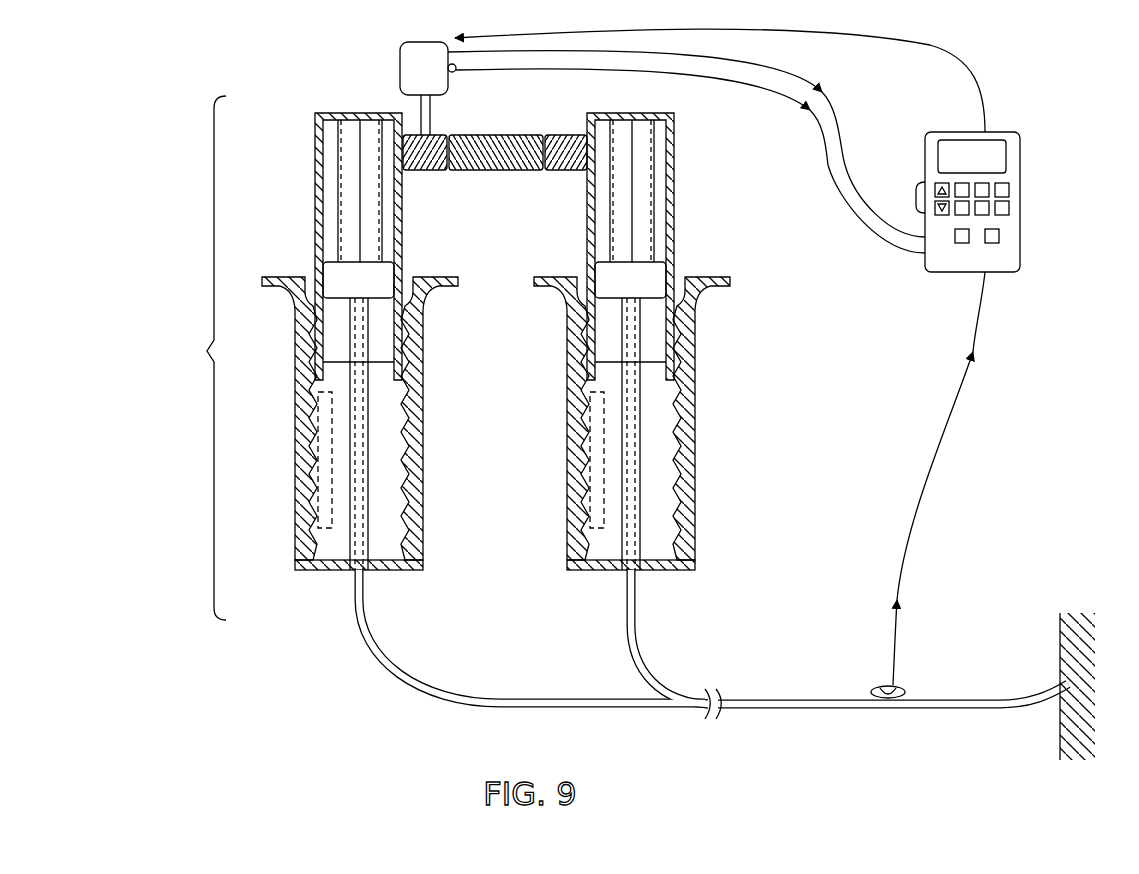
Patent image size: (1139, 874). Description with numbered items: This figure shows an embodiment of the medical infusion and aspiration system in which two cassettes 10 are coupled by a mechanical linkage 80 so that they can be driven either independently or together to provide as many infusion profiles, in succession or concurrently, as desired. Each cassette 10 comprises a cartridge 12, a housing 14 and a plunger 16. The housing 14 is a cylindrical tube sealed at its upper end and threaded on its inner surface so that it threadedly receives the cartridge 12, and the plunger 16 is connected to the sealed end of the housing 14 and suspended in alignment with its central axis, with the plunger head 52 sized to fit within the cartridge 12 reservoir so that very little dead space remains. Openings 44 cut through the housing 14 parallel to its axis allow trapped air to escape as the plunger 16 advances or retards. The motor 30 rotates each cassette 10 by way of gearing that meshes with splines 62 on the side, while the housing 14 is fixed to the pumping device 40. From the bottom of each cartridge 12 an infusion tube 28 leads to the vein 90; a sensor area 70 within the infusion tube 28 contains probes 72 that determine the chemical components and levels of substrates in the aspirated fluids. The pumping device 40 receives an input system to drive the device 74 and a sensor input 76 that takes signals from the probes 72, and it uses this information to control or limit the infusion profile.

The cassette 10 is at (202, 358).
The cartridge 12 is at (315, 203).
The housing 14 is at (297, 404).
The plunger 16 is at (350, 497).
The infusion tube 28 is at (375, 652).
The motor 30 is at (424, 45).
The pumping device 40 is at (1022, 192).
The openings 44 is at (318, 464).
The plunger head 52 is at (380, 283).
The splines 62 is at (403, 193).
The sensor area 70 is at (903, 688).
The probes 72 is at (878, 688).
The input system to drive the device 74 is at (916, 190).
The sensor input 76 is at (997, 273).
The mechanical linkage 80 is at (578, 133).
The vein 90 is at (1059, 642).